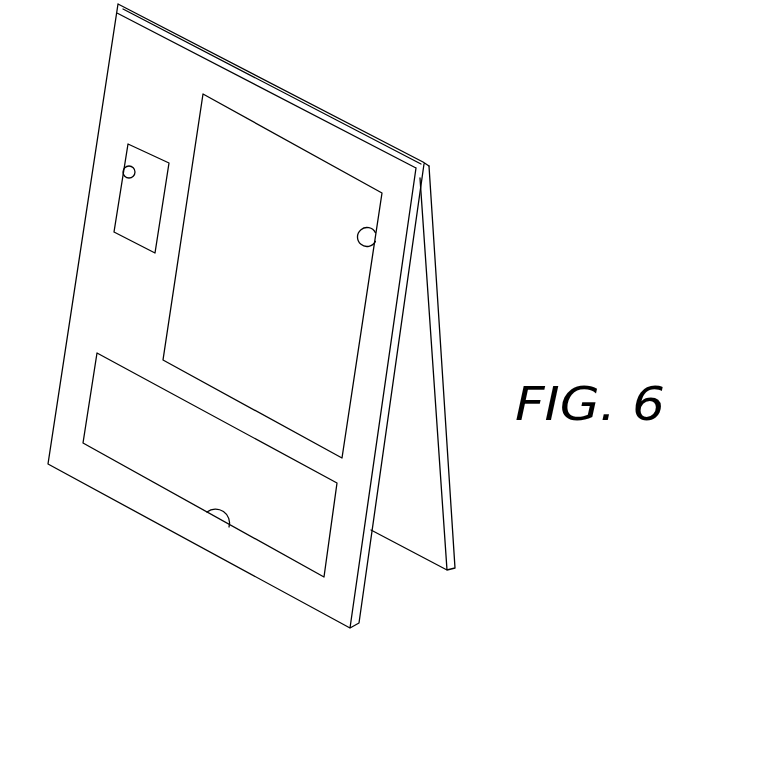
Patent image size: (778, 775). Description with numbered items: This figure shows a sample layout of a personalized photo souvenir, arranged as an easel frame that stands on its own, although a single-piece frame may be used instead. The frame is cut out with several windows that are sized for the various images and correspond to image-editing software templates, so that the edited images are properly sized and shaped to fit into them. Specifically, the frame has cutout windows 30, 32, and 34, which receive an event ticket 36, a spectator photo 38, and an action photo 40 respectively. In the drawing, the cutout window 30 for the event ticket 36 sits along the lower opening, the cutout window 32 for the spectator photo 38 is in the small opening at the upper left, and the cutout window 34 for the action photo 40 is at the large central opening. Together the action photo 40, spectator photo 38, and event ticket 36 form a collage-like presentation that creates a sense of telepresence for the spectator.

The cutout window 30 is at (229, 527).
The cutout window 32 is at (126, 181).
The cutout window 34 is at (362, 233).
The event ticket 36 is at (180, 473).
The spectator photo 38 is at (138, 210).
The action photo 40 is at (348, 298).